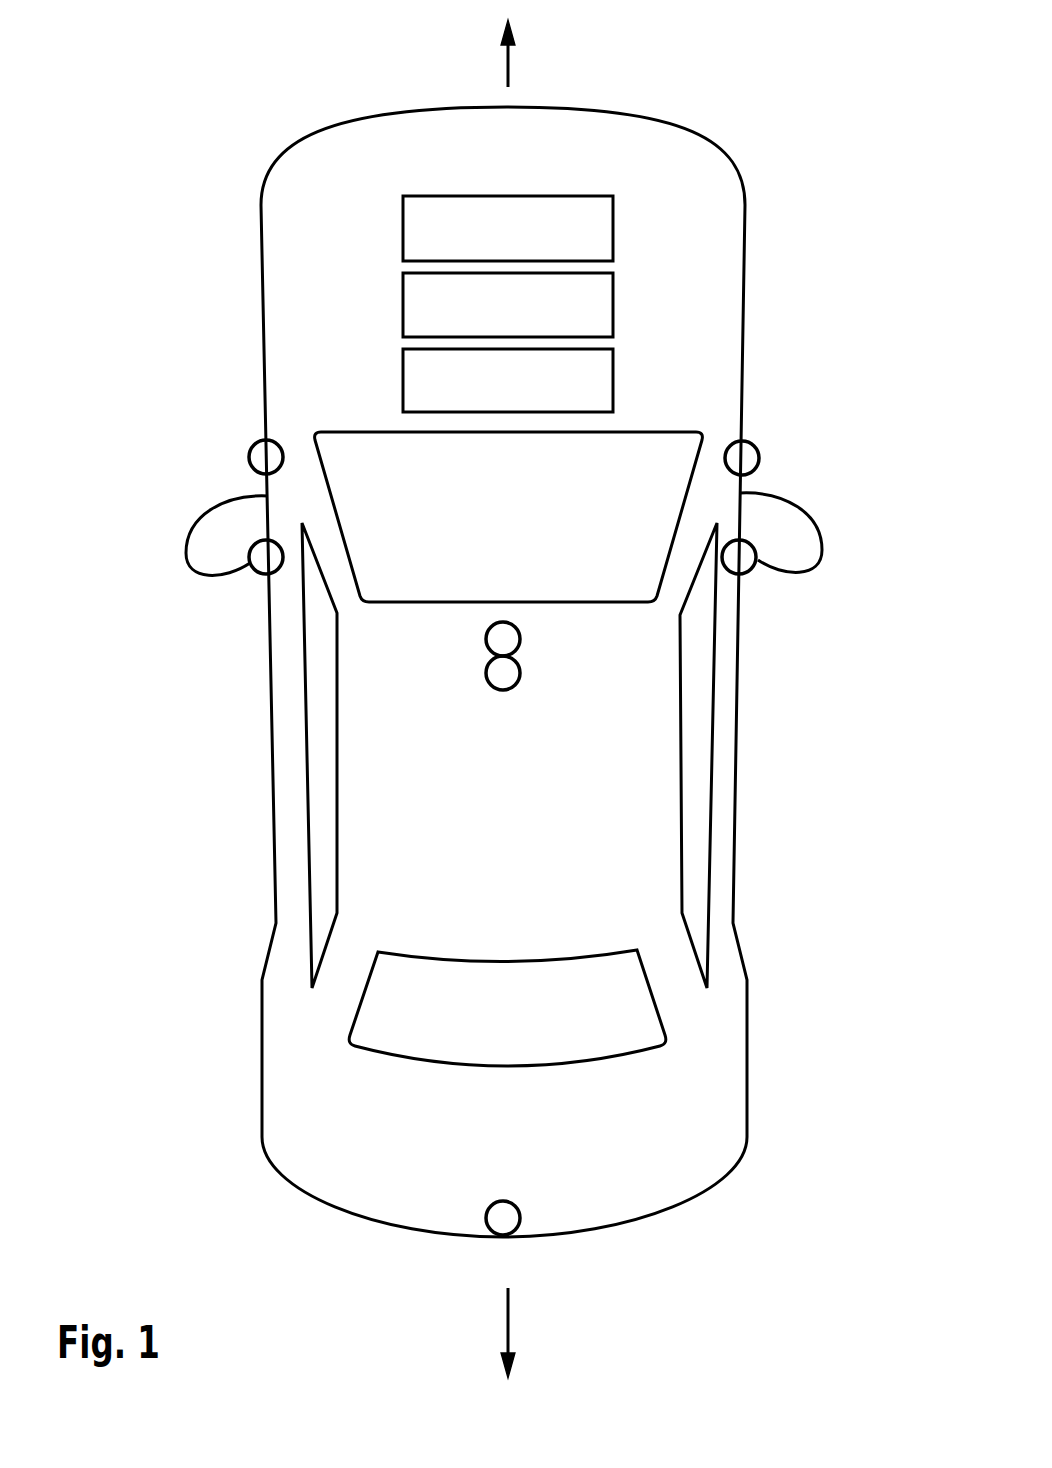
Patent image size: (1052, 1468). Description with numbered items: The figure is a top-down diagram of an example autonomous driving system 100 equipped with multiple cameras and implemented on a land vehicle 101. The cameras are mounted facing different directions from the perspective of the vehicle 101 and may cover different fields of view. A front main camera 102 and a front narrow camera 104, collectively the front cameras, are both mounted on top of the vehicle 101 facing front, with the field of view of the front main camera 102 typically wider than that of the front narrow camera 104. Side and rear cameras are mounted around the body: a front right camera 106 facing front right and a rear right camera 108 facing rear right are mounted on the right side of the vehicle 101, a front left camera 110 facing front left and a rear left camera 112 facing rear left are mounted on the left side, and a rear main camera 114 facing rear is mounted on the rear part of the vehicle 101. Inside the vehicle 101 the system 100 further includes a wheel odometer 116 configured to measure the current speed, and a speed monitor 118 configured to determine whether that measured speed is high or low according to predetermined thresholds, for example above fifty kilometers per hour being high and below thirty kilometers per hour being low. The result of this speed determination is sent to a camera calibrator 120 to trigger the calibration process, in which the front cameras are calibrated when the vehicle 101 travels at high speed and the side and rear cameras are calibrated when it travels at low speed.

The autonomous driving system 100 is at (82, 23).
The vehicle 101 is at (678, 132).
The front main camera 102 is at (639, 728).
The front narrow camera 104 is at (500, 692).
The front right camera 106 is at (760, 458).
The rear right camera 108 is at (753, 563).
The front left camera 110 is at (248, 465).
The rear left camera 112 is at (252, 568).
The rear main camera 114 is at (512, 1202).
The wheel odometer 116 is at (525, 252).
The speed monitor 118 is at (525, 328).
The camera calibrator 120 is at (525, 403).